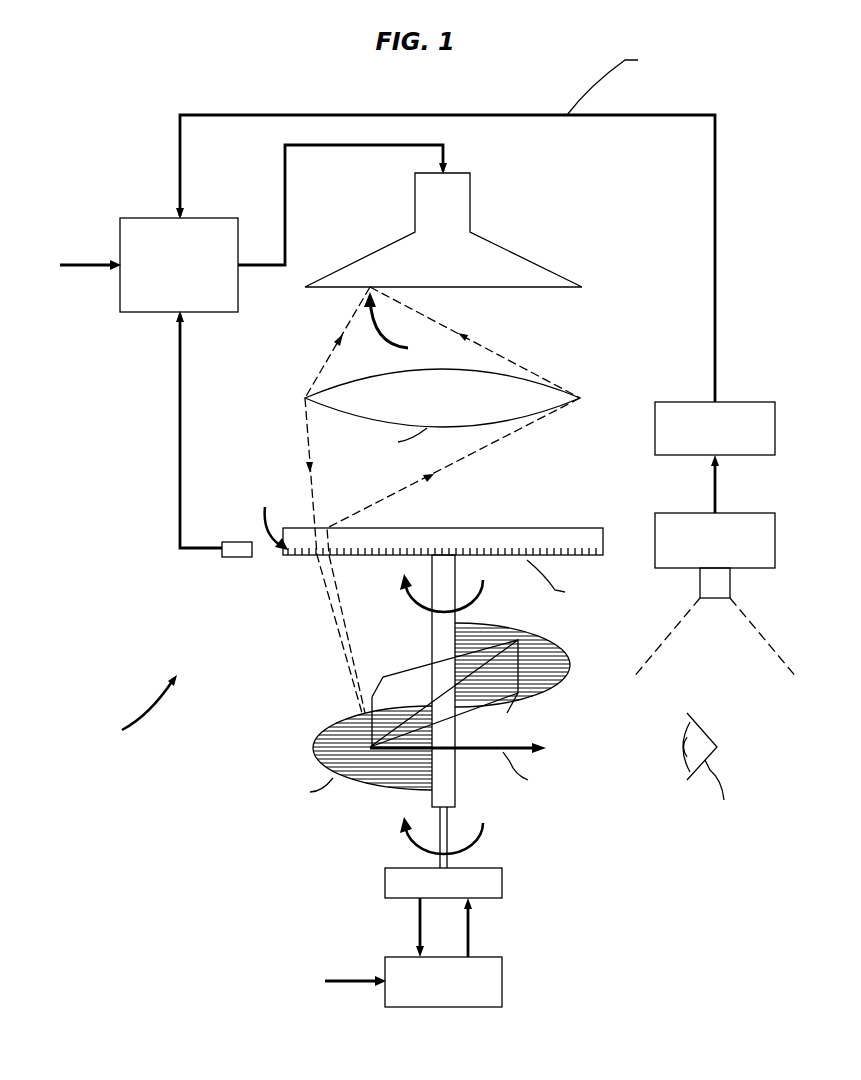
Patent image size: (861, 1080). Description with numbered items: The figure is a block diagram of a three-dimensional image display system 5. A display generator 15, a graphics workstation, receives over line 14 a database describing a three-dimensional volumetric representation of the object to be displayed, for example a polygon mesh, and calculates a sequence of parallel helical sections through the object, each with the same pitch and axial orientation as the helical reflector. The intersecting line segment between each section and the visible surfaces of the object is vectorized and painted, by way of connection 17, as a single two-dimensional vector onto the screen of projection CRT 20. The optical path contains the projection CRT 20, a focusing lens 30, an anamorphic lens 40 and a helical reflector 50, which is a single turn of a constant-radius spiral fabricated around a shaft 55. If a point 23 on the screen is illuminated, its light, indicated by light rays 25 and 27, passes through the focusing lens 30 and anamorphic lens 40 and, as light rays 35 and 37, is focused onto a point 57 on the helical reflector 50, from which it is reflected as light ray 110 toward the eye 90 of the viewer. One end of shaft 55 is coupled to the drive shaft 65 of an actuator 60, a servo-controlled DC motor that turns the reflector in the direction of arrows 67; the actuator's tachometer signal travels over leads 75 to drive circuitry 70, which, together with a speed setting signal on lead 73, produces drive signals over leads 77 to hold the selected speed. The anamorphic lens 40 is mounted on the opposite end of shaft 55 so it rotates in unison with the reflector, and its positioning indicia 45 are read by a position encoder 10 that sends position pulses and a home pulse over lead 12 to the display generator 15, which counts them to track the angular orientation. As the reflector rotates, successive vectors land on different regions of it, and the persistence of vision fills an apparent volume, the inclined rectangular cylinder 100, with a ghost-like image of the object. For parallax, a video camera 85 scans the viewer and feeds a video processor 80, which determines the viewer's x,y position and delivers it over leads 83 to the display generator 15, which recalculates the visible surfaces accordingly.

The three-dimensional image display system 5 is at (108, 741).
The position encoder 10 is at (236, 541).
The lead 12 is at (180, 388).
The line 14 is at (100, 313).
The display generator 15 is at (210, 218).
The display signal line 17 is at (285, 192).
The projection CRT 20 is at (463, 173).
The point 23 is at (399, 324).
The light ray 25 is at (332, 332).
The light ray 27 is at (450, 325).
The focusing lens 30 is at (507, 373).
The light ray 35 is at (308, 451).
The light ray 37 is at (477, 452).
The anamorphic lens 40 is at (540, 528).
The positioning indicia 45 is at (275, 519).
The helical reflector 50 is at (558, 648).
The shaft 55 is at (457, 800).
The point 57 is at (345, 722).
The actuator 60 is at (385, 883).
The drive shaft 65 is at (460, 855).
The arrows 67 is at (485, 590).
The drive circuitry 70 is at (502, 980).
The lead 73 is at (358, 984).
The leads 75 is at (420, 934).
The leads 77 is at (468, 930).
The video processor 80 is at (655, 428).
The leads 83 is at (715, 373).
The video camera 85 is at (686, 513).
The eye 90 is at (683, 745).
The inclined rectangular cylinder 100 is at (408, 676).
The light ray 110 is at (548, 732).